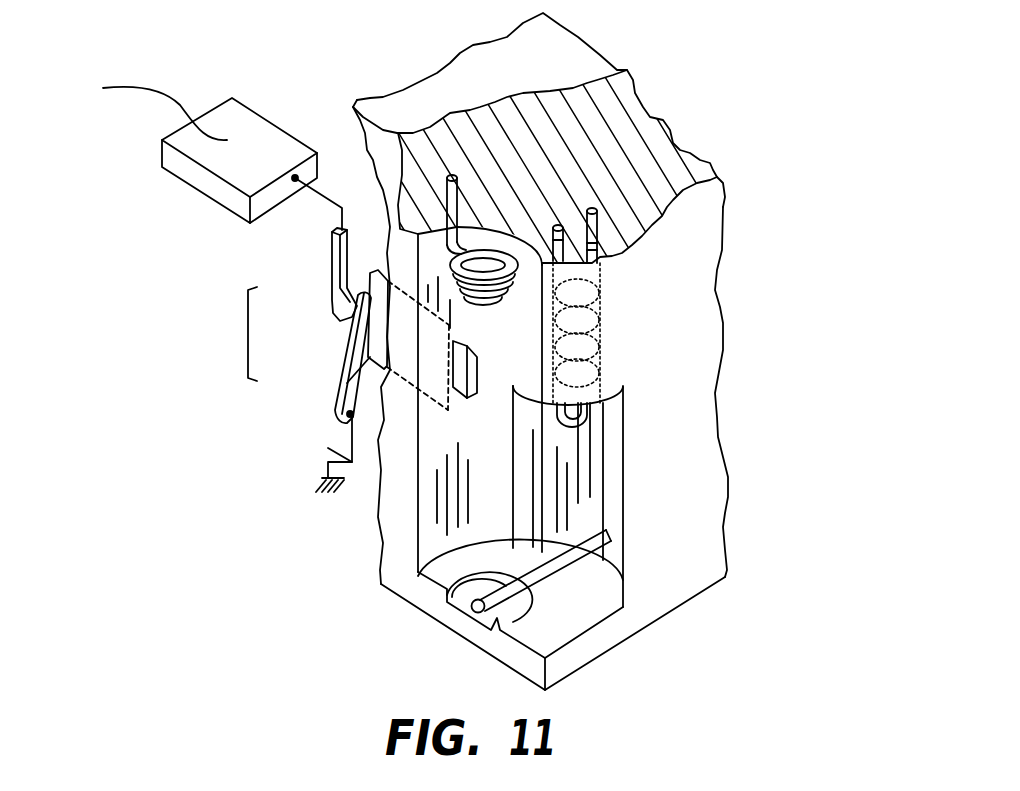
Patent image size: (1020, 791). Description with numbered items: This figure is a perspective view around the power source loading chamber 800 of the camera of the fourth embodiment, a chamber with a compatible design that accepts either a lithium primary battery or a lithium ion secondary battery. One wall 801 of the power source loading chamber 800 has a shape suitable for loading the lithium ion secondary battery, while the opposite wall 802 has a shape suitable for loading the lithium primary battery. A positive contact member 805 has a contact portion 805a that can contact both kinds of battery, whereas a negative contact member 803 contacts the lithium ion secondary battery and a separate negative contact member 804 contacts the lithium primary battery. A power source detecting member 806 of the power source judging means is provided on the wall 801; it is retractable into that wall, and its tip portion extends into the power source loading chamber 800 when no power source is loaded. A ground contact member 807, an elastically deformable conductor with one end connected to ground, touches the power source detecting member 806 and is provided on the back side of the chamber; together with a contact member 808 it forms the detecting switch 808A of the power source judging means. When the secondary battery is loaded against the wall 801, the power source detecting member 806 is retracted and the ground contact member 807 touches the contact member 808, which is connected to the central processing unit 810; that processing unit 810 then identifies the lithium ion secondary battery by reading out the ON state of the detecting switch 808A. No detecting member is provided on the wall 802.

The power source loading chamber 800 is at (676, 628).
The wall 801 is at (462, 483).
The wall 802 is at (527, 505).
The negative contact member 803 is at (443, 176).
The negative contact member 804 is at (558, 226).
The positive contact member 805 is at (595, 208).
The contact portion 805a is at (497, 592).
The power source detecting member 806 is at (487, 376).
The ground contact member 807 is at (350, 353).
The contact member 808 is at (333, 277).
The detecting switch 808A is at (279, 360).
The CPU 810 is at (222, 190).